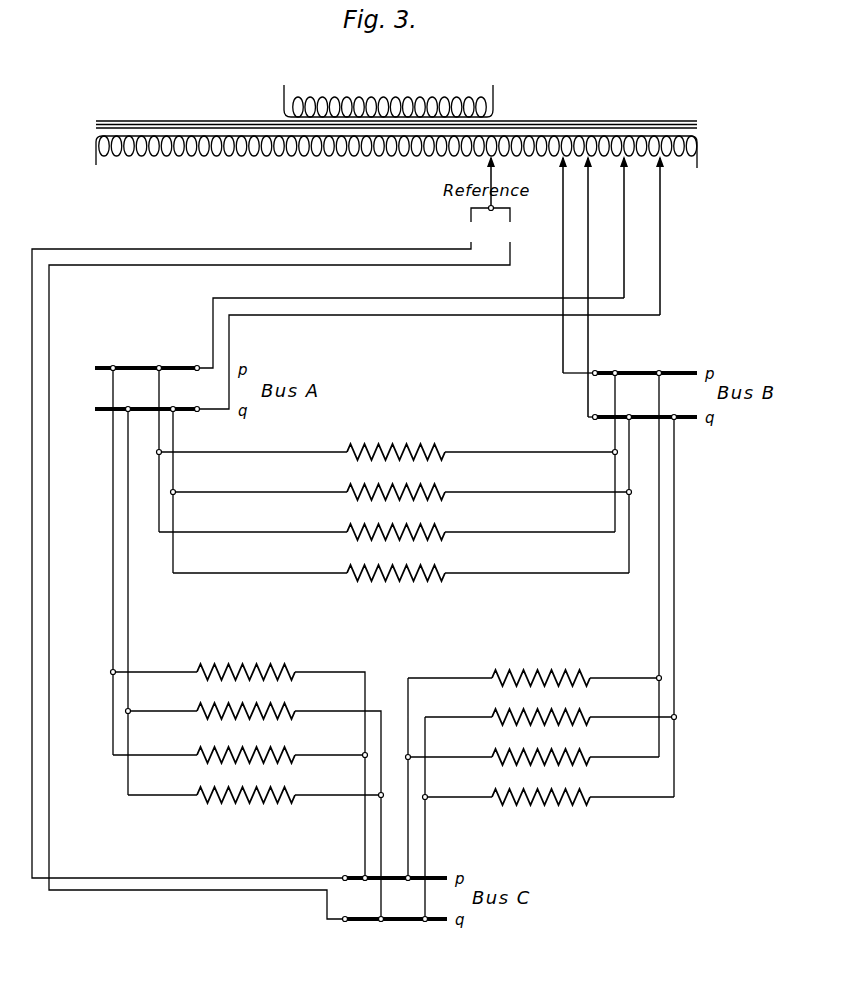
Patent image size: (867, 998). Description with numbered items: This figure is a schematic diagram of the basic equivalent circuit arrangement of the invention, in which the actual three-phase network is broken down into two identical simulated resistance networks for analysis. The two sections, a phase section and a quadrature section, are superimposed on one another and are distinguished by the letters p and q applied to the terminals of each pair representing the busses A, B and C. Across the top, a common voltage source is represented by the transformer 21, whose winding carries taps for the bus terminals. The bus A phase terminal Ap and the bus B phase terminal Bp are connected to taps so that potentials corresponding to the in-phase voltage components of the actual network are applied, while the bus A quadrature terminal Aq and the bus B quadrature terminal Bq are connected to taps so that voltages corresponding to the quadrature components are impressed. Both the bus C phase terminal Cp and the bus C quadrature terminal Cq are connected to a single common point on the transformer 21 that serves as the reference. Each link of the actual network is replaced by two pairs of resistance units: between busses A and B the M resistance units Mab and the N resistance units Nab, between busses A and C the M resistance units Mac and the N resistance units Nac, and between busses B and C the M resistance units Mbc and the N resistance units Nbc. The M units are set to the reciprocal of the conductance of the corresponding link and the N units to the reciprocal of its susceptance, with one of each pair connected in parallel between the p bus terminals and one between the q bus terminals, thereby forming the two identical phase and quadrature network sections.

The transformer 21 is at (289, 153).
The bus B phase terminal Bp is at (575, 264).
The bus B quadrature terminal Bq is at (590, 286).
The bus A phase terminal Ap is at (415, 262).
The bus A quadrature terminal Aq is at (433, 282).
The bus C phase terminal Cp is at (256, 550).
The bus C quadrature terminal Cq is at (282, 570).
The M resistance units of link A-B Mab is at (394, 463).
The N resistance units of link A-B Nab is at (394, 543).
The M resistance units of link A-C Mac is at (247, 783).
The N resistance units of link A-C Nac is at (247, 766).
The M resistance units of link B-C Mbc is at (541, 786).
The N resistance units of link B-C Nbc is at (541, 768).